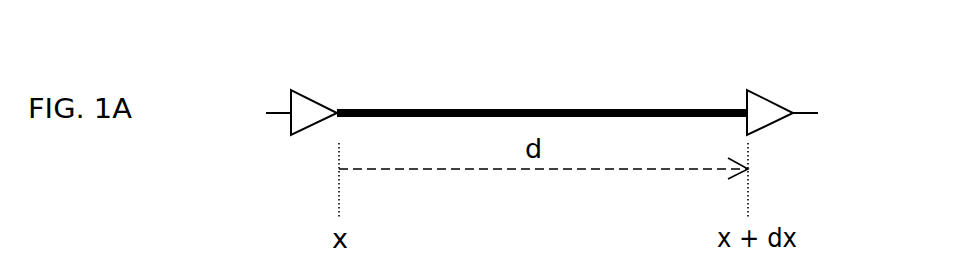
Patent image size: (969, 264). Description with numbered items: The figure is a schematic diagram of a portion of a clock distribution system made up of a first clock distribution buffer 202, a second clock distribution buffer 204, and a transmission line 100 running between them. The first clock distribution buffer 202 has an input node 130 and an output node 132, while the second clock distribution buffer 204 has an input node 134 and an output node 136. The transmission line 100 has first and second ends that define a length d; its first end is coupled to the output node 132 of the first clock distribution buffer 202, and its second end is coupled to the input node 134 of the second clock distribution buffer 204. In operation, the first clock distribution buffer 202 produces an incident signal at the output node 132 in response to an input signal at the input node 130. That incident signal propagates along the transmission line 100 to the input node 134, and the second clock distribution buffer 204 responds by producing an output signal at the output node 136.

The transmission line 100 is at (529, 100).
The input node 130 is at (275, 127).
The output node 132 is at (338, 99).
The input node 134 is at (743, 97).
The output node 136 is at (797, 122).
The first clock distribution buffer 202 is at (297, 83).
The second clock distribution buffer 204 is at (769, 92).